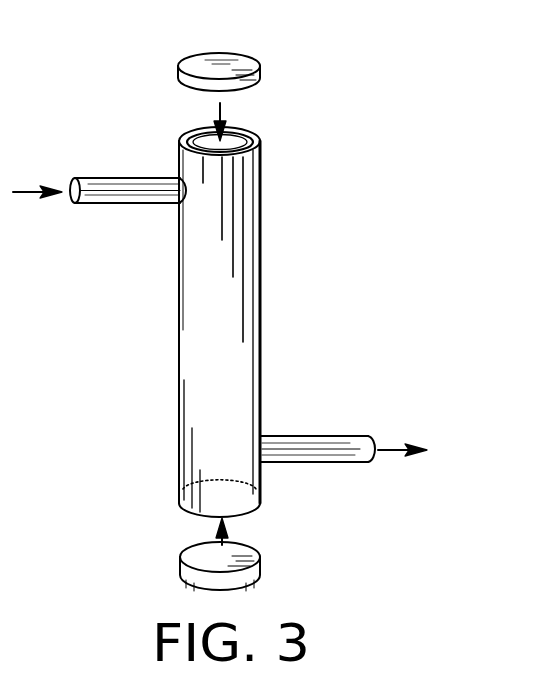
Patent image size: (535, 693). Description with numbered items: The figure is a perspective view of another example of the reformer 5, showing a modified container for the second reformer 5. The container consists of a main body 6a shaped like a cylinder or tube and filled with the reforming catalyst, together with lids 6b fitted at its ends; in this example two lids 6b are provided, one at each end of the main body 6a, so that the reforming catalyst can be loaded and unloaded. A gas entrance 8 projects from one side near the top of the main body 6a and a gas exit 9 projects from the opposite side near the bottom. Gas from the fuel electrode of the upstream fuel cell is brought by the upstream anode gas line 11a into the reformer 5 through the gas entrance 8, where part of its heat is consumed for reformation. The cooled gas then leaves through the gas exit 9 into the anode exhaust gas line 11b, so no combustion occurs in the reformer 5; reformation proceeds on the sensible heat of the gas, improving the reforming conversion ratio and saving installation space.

The second reformer 5 is at (310, 222).
The main body 6a is at (260, 317).
The lid 6b is at (257, 83).
The gas entrance 8 is at (127, 203).
The gas exit 9 is at (307, 446).
The upstream anode gas line 11a is at (22, 190).
The anode exhaust gas line 11b is at (390, 447).